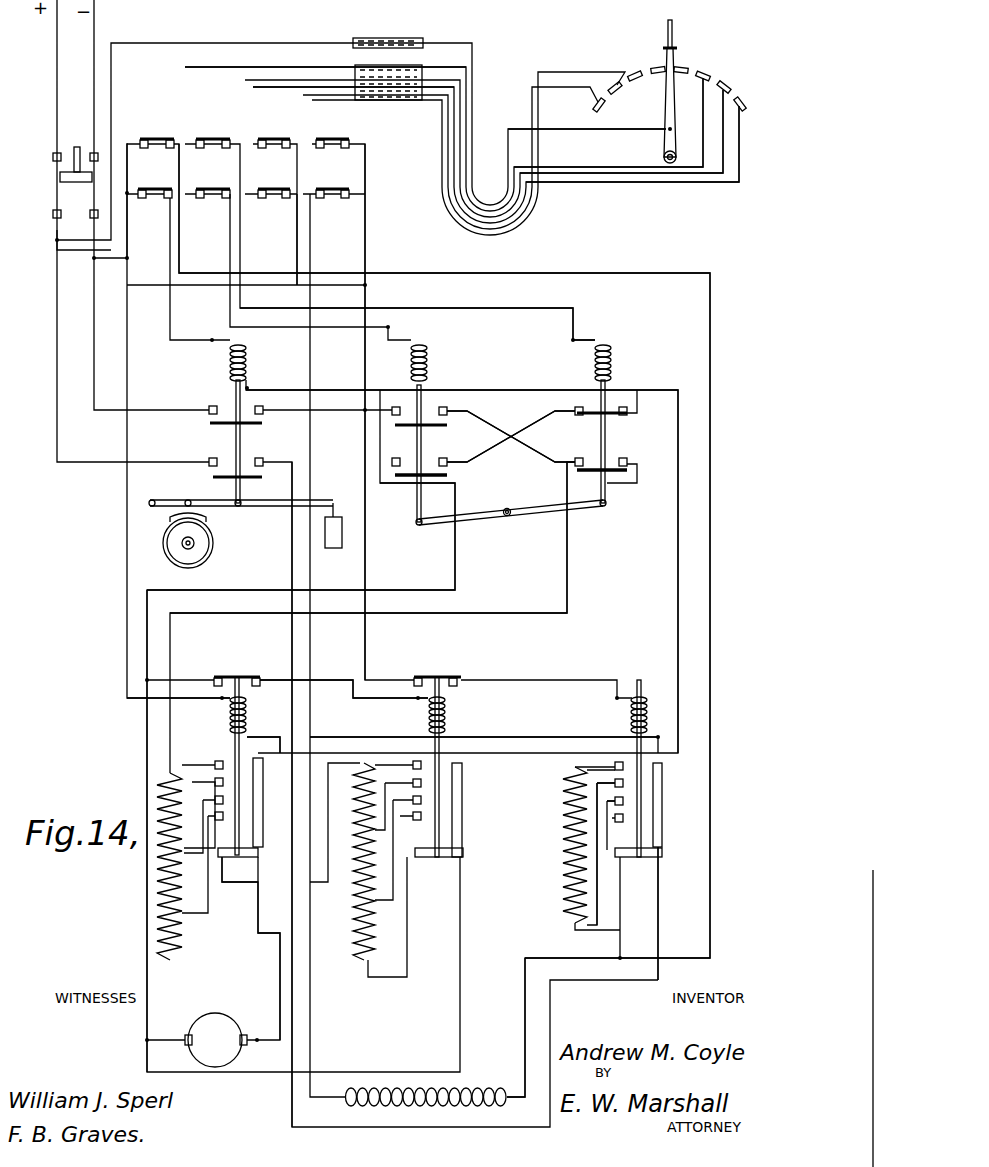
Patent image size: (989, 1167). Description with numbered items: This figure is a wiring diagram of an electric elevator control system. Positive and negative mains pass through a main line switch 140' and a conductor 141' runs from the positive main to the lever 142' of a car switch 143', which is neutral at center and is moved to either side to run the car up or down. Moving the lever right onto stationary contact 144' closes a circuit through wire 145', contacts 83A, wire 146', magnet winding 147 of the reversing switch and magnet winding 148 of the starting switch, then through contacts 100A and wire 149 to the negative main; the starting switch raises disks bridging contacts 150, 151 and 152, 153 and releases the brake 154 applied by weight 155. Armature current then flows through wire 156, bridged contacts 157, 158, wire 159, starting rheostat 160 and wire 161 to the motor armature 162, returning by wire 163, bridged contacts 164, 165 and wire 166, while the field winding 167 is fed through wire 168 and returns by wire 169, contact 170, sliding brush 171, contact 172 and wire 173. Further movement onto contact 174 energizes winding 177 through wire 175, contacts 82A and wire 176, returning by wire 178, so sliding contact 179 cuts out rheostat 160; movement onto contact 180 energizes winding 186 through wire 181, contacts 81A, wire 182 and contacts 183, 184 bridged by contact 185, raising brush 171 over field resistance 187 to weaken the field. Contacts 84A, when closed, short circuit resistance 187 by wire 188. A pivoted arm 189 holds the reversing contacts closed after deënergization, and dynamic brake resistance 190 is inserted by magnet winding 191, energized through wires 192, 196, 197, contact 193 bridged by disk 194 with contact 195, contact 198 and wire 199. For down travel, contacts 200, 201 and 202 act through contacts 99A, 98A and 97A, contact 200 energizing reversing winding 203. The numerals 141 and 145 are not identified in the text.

The main line switch 140' is at (55, 182).
The negative conductor 141 is at (62, 254).
The conductor 145 is at (315, 57).
The contacts closed by switch 84 84A is at (157, 132).
The contacts closed by switch 100 100A is at (158, 163).
The contacts closed by switch 83 83A is at (218, 138).
The contacts of the automatic stop device 99A is at (220, 180).
The contacts closed by switch 82 82A is at (274, 138).
The contacts 98A is at (274, 188).
The contacts closed by switch 81 81A is at (335, 138).
The contacts 97A is at (334, 188).
The wire 175 is at (262, 88).
The wire 181 is at (337, 98).
The wire 188 is at (180, 215).
The wire 149 is at (127, 240).
The wire 176 is at (300, 248).
The car switch contact 202 is at (596, 98).
The car switch contact 201 is at (614, 82).
The car switch contact 200 is at (636, 72).
The lever of car switch 142' is at (648, 90).
The car switch 143' is at (723, 45).
The stationary contact 144' is at (730, 67).
The contact 174 is at (732, 90).
The contact 180 is at (745, 106).
The conductor 141' is at (605, 122).
The wire 145' is at (652, 131).
The wire 146' is at (427, 316).
The magnet winding of starting switch 148 is at (228, 366).
The starting switch contact 150 is at (210, 405).
The starting switch contact 151 is at (266, 407).
The starting switch contact 152 is at (210, 458).
The starting switch contact 153 is at (265, 452).
The brake 154 is at (181, 499).
The weight 155 is at (333, 548).
The wire 173 is at (292, 525).
The wire 182 is at (367, 372).
The magnet winding of reversing switch 203 is at (428, 362).
The wire 166 is at (457, 391).
The wire 163 is at (525, 425).
The reversing switch contact 164 is at (577, 412).
The reversing switch contact 158 is at (580, 458).
The reversing switch contact 165 is at (637, 405).
The reversing switch contact 157 is at (627, 459).
The magnet winding of reversing switch 147 is at (613, 365).
The wire 178 is at (660, 392).
The wire 156 is at (345, 463).
The wire 168 is at (310, 478).
The pivoted arm 189 is at (580, 510).
The wire 159 is at (567, 615).
The contact 183 is at (415, 675).
The contact 185 is at (440, 680).
The contact 184 is at (465, 680).
The magnet winding 191 is at (447, 718).
The magnet winding 186 is at (632, 705).
The field resistance 187 is at (572, 857).
The wire 196 is at (375, 698).
The wire 197 is at (355, 738).
The wire 192 is at (187, 680).
The contact 193 is at (214, 678).
The disk 194 is at (243, 677).
The contact 195 is at (258, 680).
The winding of rheostat controller 177 is at (248, 715).
The contact of starting resistance controller 198 is at (262, 805).
The sliding contact 179 is at (245, 862).
The wire 199 is at (259, 882).
The starting rheostat 160 is at (157, 883).
The dynamic brake resistance 190 is at (356, 890).
The wire 161 is at (258, 1008).
The motor armature 162 is at (235, 1047).
The field winding 167 is at (462, 1090).
The wire 169 is at (525, 990).
The contact 170 is at (603, 855).
The sliding brush 171 is at (645, 860).
The contact 172 is at (662, 795).